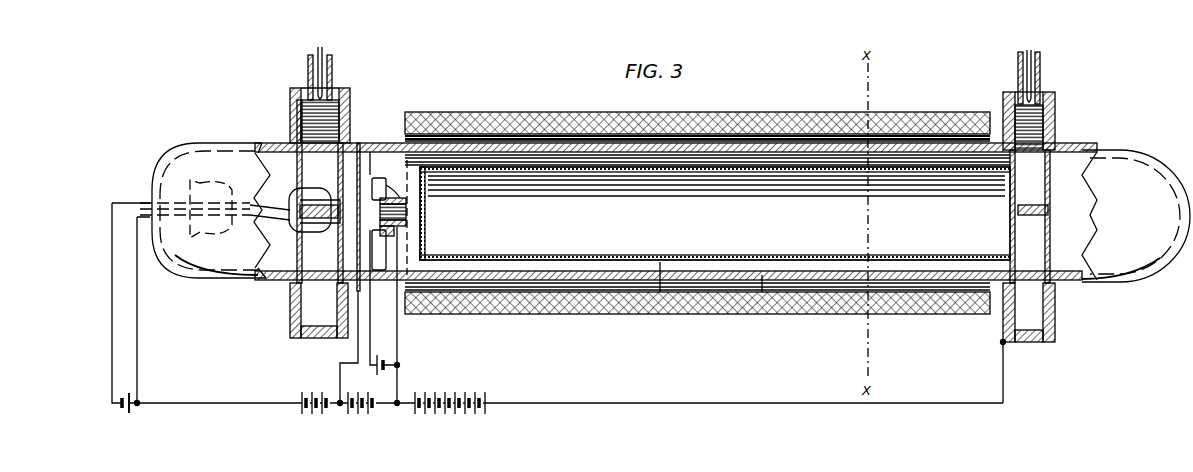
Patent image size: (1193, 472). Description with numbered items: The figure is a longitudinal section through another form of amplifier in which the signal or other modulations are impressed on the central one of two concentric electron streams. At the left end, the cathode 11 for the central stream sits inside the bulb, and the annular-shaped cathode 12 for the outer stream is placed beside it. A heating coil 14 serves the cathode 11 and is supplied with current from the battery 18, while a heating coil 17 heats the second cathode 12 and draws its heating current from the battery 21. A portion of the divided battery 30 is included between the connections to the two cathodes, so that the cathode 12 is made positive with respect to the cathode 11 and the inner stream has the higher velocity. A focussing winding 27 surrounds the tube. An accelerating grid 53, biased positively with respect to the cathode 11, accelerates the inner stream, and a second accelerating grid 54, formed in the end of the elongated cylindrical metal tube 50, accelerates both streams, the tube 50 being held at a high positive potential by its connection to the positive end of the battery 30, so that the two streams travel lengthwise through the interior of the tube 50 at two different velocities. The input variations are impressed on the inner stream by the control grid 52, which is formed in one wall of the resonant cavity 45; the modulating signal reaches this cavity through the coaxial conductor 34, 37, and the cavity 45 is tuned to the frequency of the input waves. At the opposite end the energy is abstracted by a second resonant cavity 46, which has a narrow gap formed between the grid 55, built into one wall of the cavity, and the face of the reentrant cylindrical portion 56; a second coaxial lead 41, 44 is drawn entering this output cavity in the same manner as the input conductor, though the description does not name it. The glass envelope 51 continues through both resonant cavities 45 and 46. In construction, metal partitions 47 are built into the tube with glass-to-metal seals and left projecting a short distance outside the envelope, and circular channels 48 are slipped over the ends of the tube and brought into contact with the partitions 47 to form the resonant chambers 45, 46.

The cathode 11 is at (332, 228).
The annular-shaped cathode 12 is at (405, 192).
The heating coil 14 is at (298, 190).
The heating coil 17 is at (384, 314).
The battery 18 is at (124, 416).
The battery 21 is at (393, 355).
The focussing winding 27 is at (503, 113).
The divided battery 30 is at (452, 392).
The coaxial conductor 34 is at (322, 53).
The coaxial conductor 37 is at (333, 72).
The lead tube 41 is at (1042, 78).
The lead conductor 44 is at (1033, 53).
The resonant cavity 45 is at (314, 315).
The second resonant cavity 46 is at (1035, 316).
The metal partitions 47 is at (292, 143).
The circular channels 48 is at (292, 92).
The elongated cylindrical metal tube 50 is at (660, 292).
The glass envelope 51 is at (762, 292).
The control grid 52 is at (358, 150).
The accelerating grid 53 is at (372, 150).
The second accelerating grid 54 is at (425, 222).
The grid 55 is at (1010, 222).
The reentrant cylindrical portion 56 is at (1045, 204).